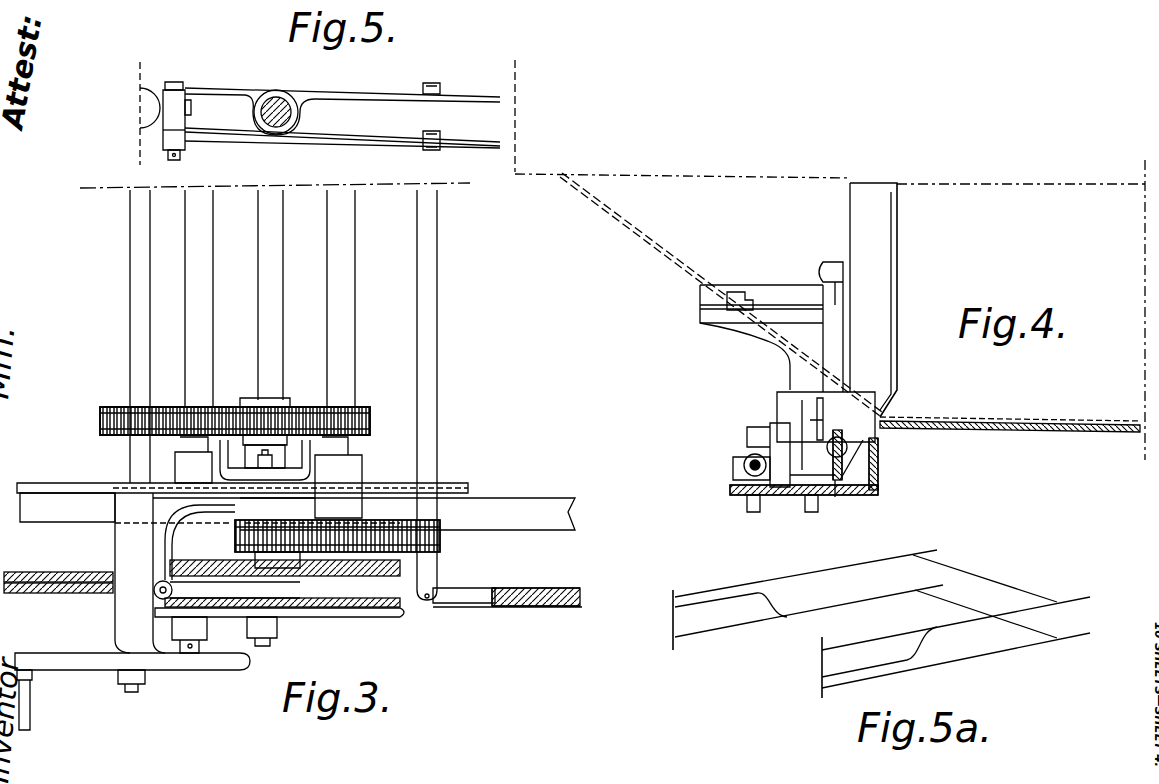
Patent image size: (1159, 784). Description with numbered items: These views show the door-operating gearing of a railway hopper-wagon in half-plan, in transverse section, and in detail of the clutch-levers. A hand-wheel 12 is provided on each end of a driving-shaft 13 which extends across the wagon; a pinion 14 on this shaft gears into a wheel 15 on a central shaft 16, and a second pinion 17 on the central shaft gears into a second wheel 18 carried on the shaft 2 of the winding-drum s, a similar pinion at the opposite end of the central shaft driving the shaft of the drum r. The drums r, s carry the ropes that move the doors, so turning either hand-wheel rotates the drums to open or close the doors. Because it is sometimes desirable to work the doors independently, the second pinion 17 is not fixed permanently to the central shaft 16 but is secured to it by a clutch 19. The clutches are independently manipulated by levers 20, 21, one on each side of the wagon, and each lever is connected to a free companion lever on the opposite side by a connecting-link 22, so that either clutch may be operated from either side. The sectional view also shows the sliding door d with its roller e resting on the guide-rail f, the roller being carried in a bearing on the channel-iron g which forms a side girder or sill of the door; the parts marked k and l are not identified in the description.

In FIG. 3, the shaft 2 is at (211, 243).
In FIG. 3, the hand-wheel 12 is at (86, 658).
In FIG. 3, the driving-shaft 13 is at (133, 236).
In FIG. 3, the pinion 14 is at (100, 421).
In FIG. 3, the wheel 15 is at (303, 408).
In FIG. 3, the central shaft 16 is at (276, 360).
In FIG. 3, the second pinion 17 is at (222, 523).
In FIG. 3, the second wheel 18 is at (440, 541).
In FIG. 5, the clutch 19 is at (274, 97).
In FIG. 3, the clutch 19 is at (227, 590).
In FIG. 5, the clutch lever 20 is at (345, 96).
In FIG. 3, the clutch lever 20 is at (480, 601).
In FIG. 5A, the clutch lever 20 is at (845, 563).
In FIG. 5, the clutch lever 21 is at (360, 141).
In FIG. 3, the clutch lever 21 is at (440, 605).
In FIG. 5A, the clutch lever 21 is at (855, 598).
In FIG. 5, the connecting-link 22 is at (433, 87).
In FIG. 3, the connecting-link 22 is at (438, 253).
In FIG. 5A, the connecting-link 22 is at (974, 602).
In FIG. 3, the winding-drum r is at (224, 614).
In FIG. 3, the winding-drum s is at (365, 618).
In FIG. 4, the door d is at (1020, 423).
In FIG. 4, the roller e is at (822, 414).
In FIG. 4, the guide-rail f is at (838, 497).
In FIG. 4, the channel-iron g is at (879, 481).
In FIG. 4, the nut k is at (743, 507).
In FIG. 4, the bolt l is at (736, 478).